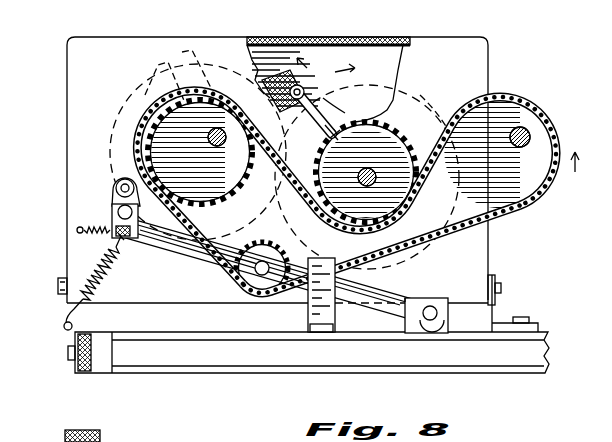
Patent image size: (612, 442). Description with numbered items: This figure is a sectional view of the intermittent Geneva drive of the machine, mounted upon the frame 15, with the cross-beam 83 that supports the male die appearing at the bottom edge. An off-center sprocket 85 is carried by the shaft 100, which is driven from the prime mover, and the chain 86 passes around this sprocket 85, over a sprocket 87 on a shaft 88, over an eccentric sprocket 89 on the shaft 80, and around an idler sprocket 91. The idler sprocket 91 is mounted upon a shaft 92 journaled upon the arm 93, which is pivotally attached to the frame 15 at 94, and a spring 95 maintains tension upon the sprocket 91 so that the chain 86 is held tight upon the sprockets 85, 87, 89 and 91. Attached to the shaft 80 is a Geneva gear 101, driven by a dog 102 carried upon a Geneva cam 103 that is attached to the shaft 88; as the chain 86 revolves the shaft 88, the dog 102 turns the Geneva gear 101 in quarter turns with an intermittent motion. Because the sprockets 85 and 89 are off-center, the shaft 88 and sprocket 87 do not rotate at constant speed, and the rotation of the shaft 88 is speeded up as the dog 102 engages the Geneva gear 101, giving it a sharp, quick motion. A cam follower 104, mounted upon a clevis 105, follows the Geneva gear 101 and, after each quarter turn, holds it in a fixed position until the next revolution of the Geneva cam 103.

The frame 15 is at (398, 376).
The shaft 80 is at (200, 152).
The cross-beam 83 is at (102, 436).
The off-center sprocket 85 is at (556, 178).
The chain 86 is at (463, 236).
The sprocket 87 is at (435, 118).
The shaft 88 is at (367, 170).
The eccentric sprocket 89 is at (156, 122).
The idler sprocket 91 is at (268, 297).
The shaft 92 is at (256, 277).
The arm 93 is at (200, 258).
The pivot 94 is at (448, 313).
The spring 95 is at (90, 272).
The shaft 100 is at (528, 132).
The Geneva gear 101 is at (152, 75).
The dog 102 is at (307, 105).
The Geneva cam 103 is at (398, 105).
The cam follower 104 is at (114, 188).
The clevis 105 is at (114, 208).